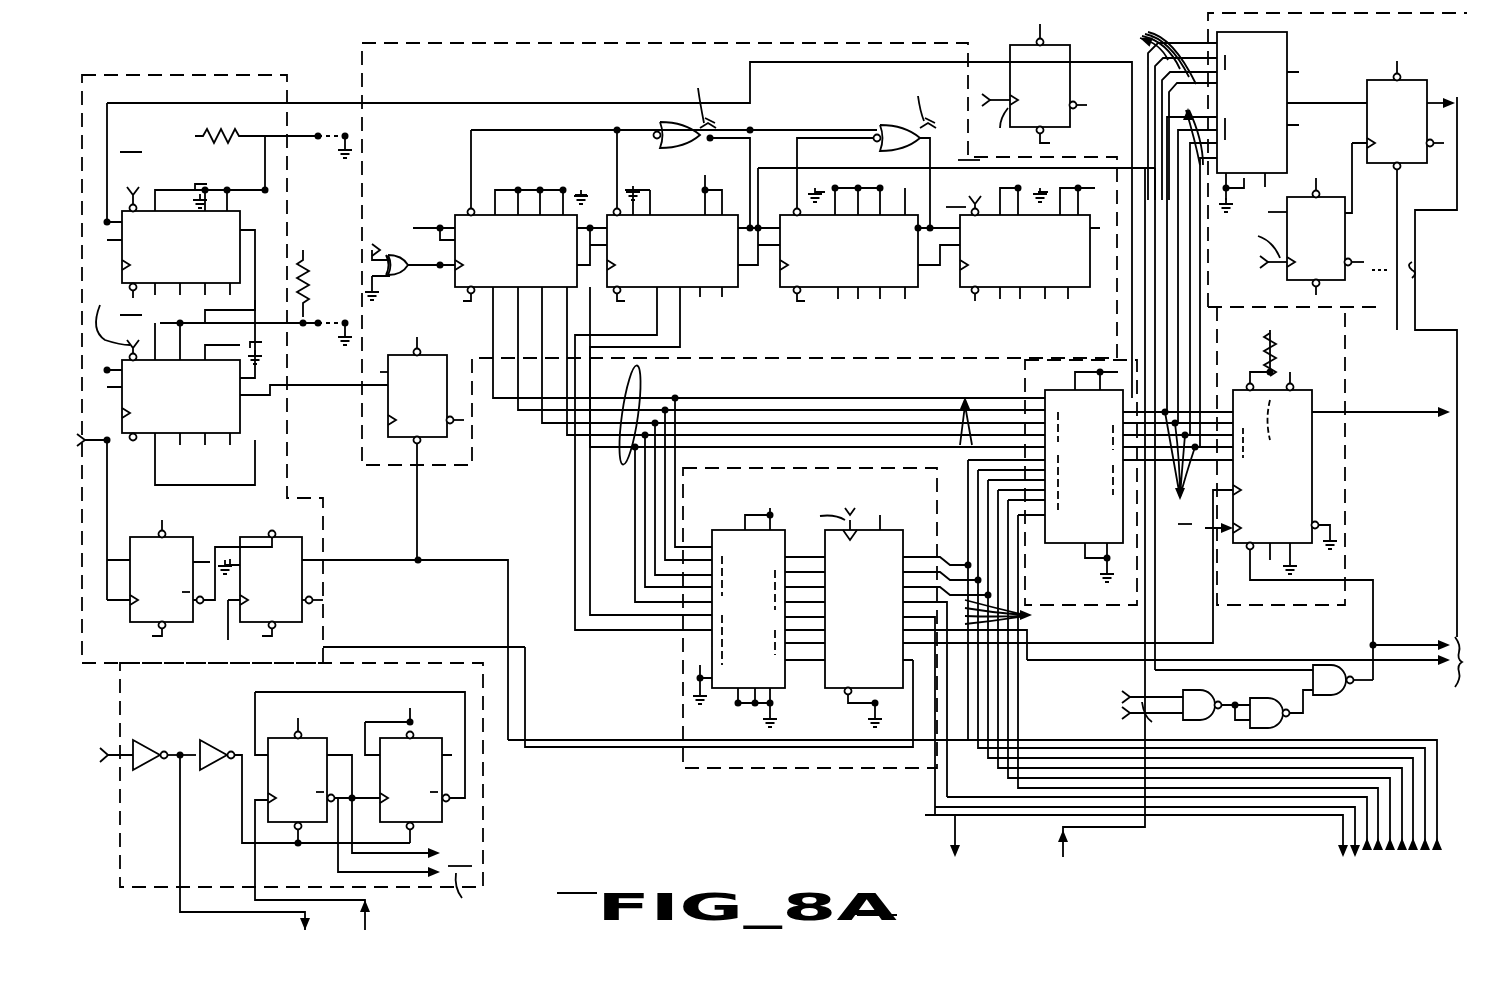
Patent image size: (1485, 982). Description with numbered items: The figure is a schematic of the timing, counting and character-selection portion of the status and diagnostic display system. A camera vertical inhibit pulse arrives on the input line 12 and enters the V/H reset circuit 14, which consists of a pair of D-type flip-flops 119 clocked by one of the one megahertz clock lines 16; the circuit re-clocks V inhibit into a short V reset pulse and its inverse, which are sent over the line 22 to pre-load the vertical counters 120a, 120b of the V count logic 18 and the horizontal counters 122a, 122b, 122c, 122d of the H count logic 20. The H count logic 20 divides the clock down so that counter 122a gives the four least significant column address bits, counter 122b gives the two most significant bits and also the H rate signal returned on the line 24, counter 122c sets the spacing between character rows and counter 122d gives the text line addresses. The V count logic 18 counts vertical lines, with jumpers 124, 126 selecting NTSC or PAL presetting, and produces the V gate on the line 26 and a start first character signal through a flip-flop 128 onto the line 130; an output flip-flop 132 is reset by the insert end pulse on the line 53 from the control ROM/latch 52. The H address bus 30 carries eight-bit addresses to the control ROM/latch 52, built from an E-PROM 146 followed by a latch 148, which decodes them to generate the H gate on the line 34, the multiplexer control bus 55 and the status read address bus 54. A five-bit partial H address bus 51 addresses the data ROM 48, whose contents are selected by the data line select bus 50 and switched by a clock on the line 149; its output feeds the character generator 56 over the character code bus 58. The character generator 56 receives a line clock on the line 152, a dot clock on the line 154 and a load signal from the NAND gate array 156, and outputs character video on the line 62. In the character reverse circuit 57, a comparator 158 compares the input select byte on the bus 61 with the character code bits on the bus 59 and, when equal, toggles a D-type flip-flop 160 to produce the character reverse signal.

The input line 12 is at (126, 747).
The V/H reset circuit 14 is at (495, 810).
The lines 16 is at (92, 450).
The V count logic 18 is at (238, 68).
The H count logic 20 is at (362, 40).
The line 22 is at (138, 190).
The line 24 is at (425, 103).
The line 26 is at (480, 572).
The H address bus 30 is at (623, 455).
The line 34 is at (1415, 645).
The data ROM 48 is at (1070, 356).
The data line select bus 50 is at (1437, 862).
The partial H address bus 51 is at (965, 407).
The control ROM/latch 52 is at (672, 676).
The line 53 is at (670, 748).
The bus 54 is at (955, 836).
The multiplexer control bus 55 is at (1312, 816).
The character generator 56 is at (1355, 381).
The character reverse circuit 57 is at (1202, 18).
The character code bus 58 is at (1180, 467).
The bus 59 is at (1192, 267).
The bus 61 is at (1172, 830).
The line 62 is at (1415, 415).
The D-type flip-flops 119 is at (380, 755).
The vertical counter 120a is at (240, 218).
The vertical counter 120b is at (240, 390).
The horizontal counter 122a is at (484, 215).
The horizontal counter 122b is at (644, 215).
The horizontal counter 122c is at (797, 215).
The horizontal counter 122d is at (1030, 288).
The jumper 124 is at (328, 323).
The jumper 126 is at (330, 148).
The flip-flop 128 is at (447, 435).
The line 130 is at (701, 323).
The output flip-flop 132 is at (302, 576).
The E-PROM 146 is at (722, 530).
The latch 148 is at (895, 530).
The line 149 is at (1442, 850).
The line 152 is at (1212, 360).
The line 154 is at (1216, 530).
The NAND gate array 156 is at (1317, 712).
The comparator 158 is at (1287, 45).
The D-type flip-flop 160 is at (1367, 94).